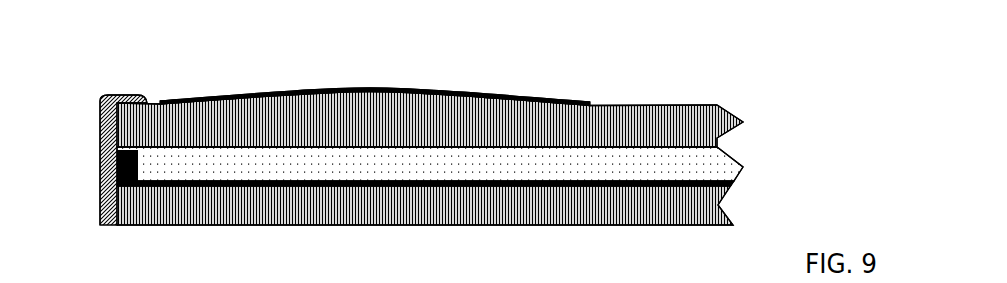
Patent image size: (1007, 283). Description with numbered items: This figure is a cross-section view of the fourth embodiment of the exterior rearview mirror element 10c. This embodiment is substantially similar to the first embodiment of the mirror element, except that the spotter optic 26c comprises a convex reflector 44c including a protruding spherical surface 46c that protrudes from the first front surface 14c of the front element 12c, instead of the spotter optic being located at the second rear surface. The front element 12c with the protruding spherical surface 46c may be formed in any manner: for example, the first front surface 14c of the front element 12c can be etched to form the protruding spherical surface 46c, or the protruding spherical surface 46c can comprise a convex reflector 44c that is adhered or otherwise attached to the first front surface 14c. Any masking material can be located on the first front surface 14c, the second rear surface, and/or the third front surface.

The exterior rearview mirror element 10c is at (114, 70).
The front element 12c is at (684, 93).
The first front surface 14c is at (627, 105).
The spotter optic 26c is at (352, 90).
The convex reflector 44c is at (453, 75).
The protruding spherical surface 46c is at (255, 100).